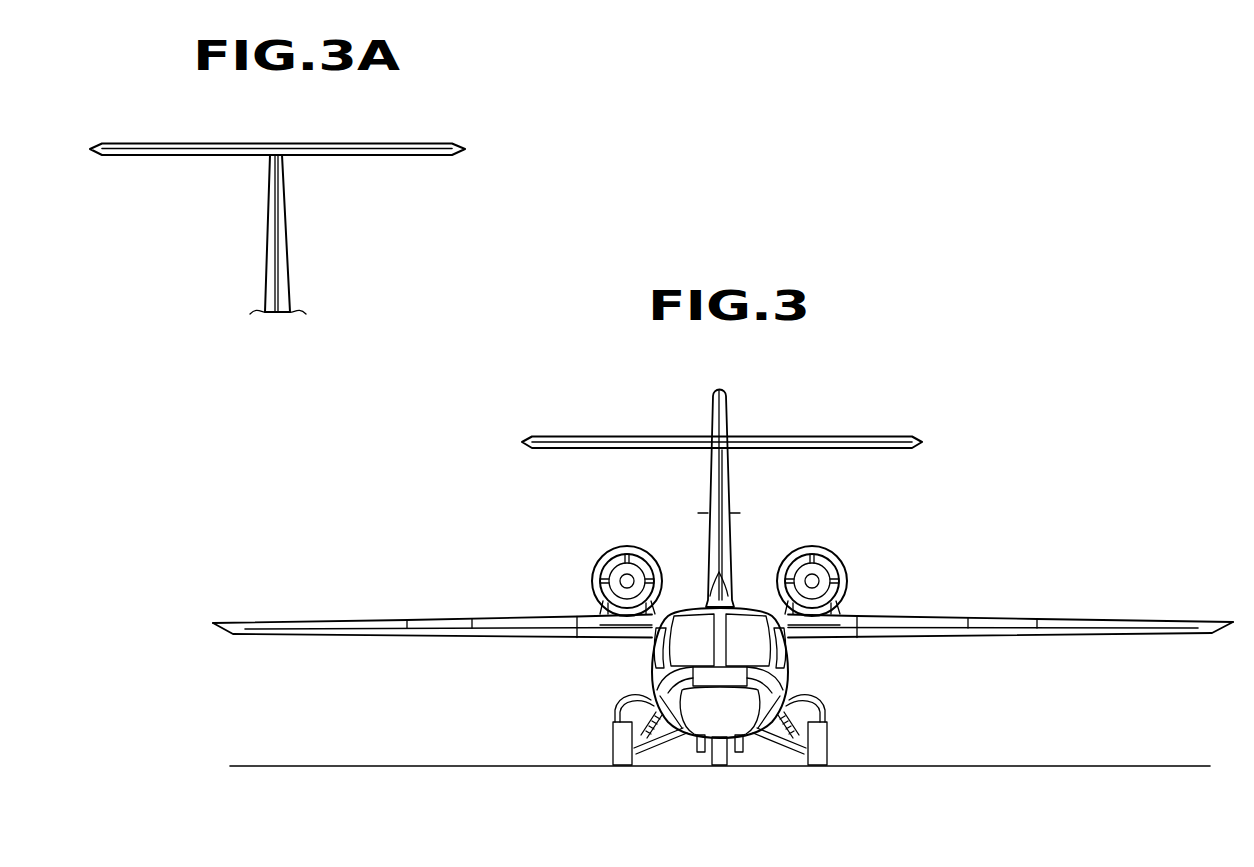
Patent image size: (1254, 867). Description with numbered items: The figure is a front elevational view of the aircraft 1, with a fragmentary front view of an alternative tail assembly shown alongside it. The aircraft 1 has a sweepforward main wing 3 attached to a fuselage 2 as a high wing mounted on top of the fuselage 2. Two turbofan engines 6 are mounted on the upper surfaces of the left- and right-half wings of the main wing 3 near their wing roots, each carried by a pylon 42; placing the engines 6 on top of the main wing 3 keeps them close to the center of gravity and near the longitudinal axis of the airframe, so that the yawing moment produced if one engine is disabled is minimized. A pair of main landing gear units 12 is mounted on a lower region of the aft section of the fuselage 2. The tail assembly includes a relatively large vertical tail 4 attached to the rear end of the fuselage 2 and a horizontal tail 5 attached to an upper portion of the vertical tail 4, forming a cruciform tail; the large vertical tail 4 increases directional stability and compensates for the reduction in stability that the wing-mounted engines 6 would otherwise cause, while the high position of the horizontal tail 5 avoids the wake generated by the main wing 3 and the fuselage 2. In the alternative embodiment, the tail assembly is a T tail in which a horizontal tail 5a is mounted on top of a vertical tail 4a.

In FIG. 3, the aircraft 1 is at (1057, 428).
In FIG. 3, the fuselage 2 is at (797, 675).
In FIG. 3, the main wing 3 is at (1028, 600).
In FIG. 3, the vertical tail 4 is at (732, 502).
In FIG. 3, the horizontal tail 5 is at (810, 438).
In FIG. 3, the turbofan engine 6 is at (837, 568).
In FIG. 3, the main landing gear unit 12 is at (602, 725).
In FIG. 3, the pylon 42 is at (840, 609).
In FIG. 3A, the vertical tail 4a is at (285, 230).
In FIG. 3A, the horizontal tail 5a is at (333, 139).